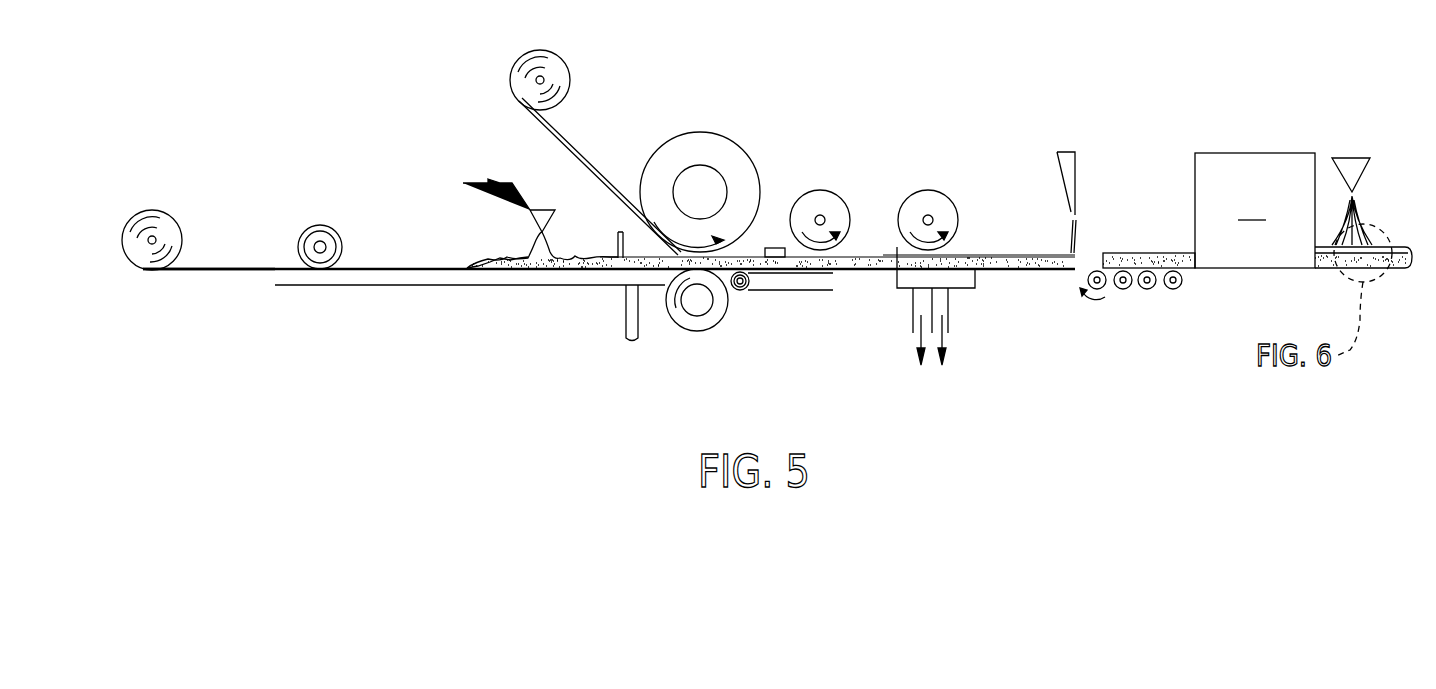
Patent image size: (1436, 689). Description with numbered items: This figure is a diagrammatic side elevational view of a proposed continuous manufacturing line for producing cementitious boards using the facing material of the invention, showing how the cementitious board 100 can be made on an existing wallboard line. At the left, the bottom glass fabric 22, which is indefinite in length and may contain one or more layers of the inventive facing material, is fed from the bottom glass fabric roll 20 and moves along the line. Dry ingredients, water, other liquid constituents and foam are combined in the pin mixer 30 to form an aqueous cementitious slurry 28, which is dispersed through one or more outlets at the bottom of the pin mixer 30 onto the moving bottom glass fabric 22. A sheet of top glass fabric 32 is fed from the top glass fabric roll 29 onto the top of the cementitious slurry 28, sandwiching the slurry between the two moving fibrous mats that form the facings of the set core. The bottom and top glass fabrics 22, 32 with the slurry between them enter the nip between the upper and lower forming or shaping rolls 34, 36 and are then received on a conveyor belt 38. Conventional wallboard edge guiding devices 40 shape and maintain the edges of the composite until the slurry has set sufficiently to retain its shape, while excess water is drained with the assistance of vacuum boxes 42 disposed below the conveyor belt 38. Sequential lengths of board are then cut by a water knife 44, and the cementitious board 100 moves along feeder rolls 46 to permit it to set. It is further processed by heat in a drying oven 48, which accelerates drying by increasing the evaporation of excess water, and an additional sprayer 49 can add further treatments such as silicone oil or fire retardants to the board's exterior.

The bottom glass fabric roll 20 is at (155, 210).
The bottom glass fabric 22 is at (184, 272).
The cementitious slurry 28 is at (503, 265).
The top glass fabric roll 29 is at (572, 68).
The pin mixer 30 is at (498, 180).
The top glass fabric 32 is at (560, 138).
The upper forming or shaping roll 34 is at (705, 147).
The lower forming or shaping roll 36 is at (710, 332).
The conveyor belt 38 is at (770, 292).
The wallboard edge guiding devices 40 is at (775, 248).
The vacuum boxes 42 is at (953, 278).
The water knife 44 is at (1067, 160).
The feeder rolls 46 is at (1134, 290).
The drying oven 48 is at (1255, 210).
The sprayer 49 is at (1348, 172).
The cementitious board 100 is at (1128, 250).